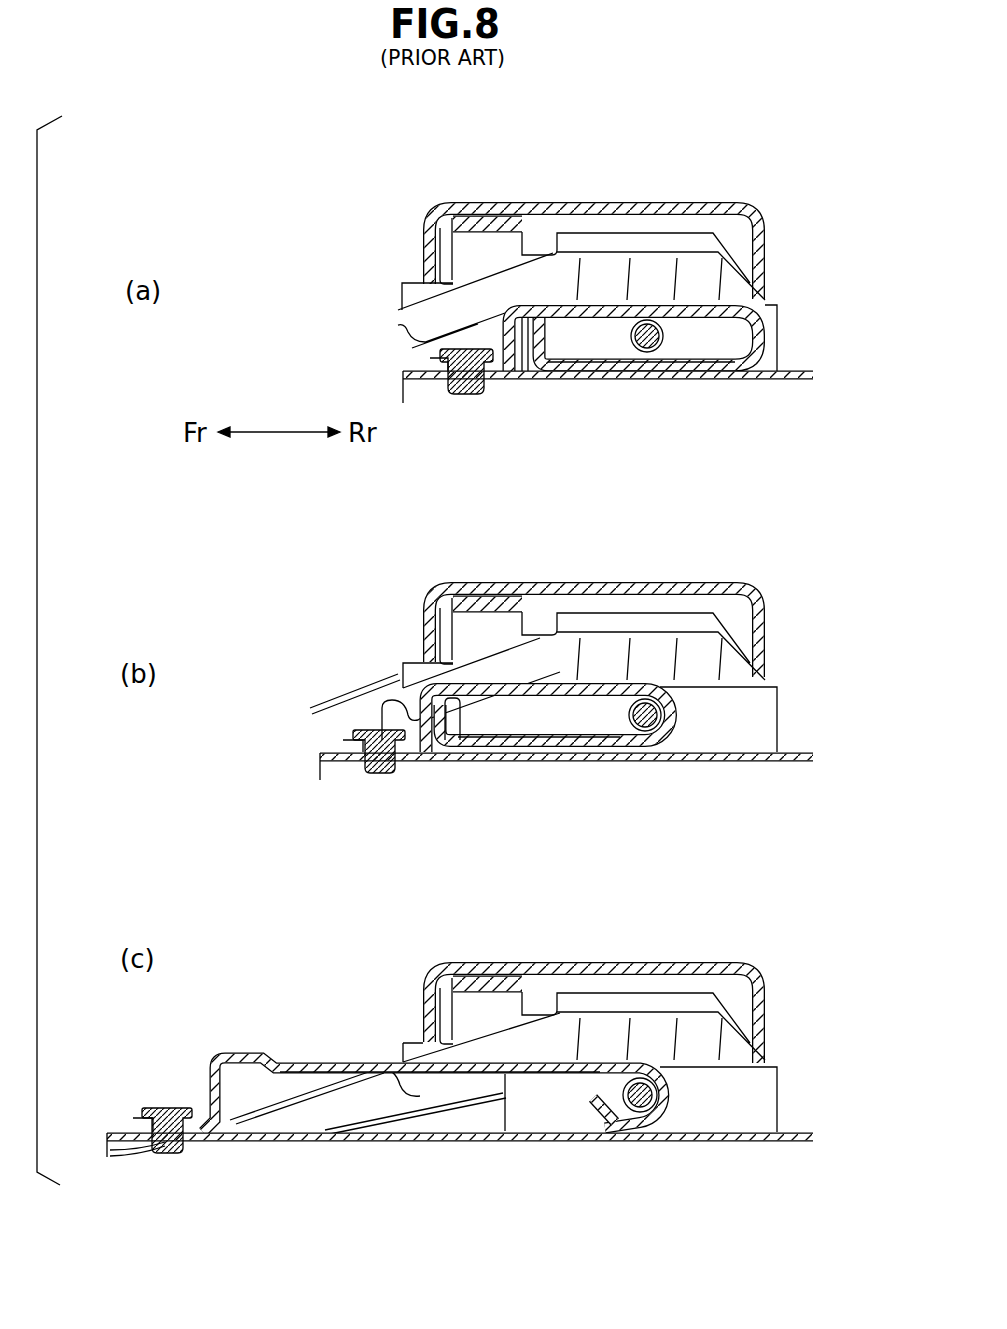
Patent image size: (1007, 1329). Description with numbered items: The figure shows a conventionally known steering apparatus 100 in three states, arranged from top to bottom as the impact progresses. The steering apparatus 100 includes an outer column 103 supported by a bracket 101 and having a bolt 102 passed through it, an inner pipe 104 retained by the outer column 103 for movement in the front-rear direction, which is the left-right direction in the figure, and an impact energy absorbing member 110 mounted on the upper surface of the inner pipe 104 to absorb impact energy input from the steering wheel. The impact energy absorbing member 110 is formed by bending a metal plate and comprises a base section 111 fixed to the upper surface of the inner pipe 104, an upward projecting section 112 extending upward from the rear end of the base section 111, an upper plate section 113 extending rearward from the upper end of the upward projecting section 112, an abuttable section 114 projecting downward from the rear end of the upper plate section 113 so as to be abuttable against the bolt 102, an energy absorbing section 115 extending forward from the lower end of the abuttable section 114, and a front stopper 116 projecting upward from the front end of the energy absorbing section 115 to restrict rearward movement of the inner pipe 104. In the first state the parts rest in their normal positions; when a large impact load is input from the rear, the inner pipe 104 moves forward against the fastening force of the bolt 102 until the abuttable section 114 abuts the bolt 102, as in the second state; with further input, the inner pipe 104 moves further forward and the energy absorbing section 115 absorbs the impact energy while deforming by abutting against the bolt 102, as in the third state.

The steering apparatus 100 is at (383, 166).
The bracket 101 is at (700, 202).
The bolt 102 is at (665, 338).
The outer column 103 is at (594, 226).
The inner pipe 104 is at (805, 371).
The impact energy absorbing member 110 is at (705, 298).
The base section 111 is at (432, 355).
The upward projecting section 112 is at (497, 322).
The upper plate section 113 is at (650, 303).
The abuttable section 114 is at (770, 335).
The energy absorbing section 115 is at (622, 372).
The front stopper 116 is at (543, 333).